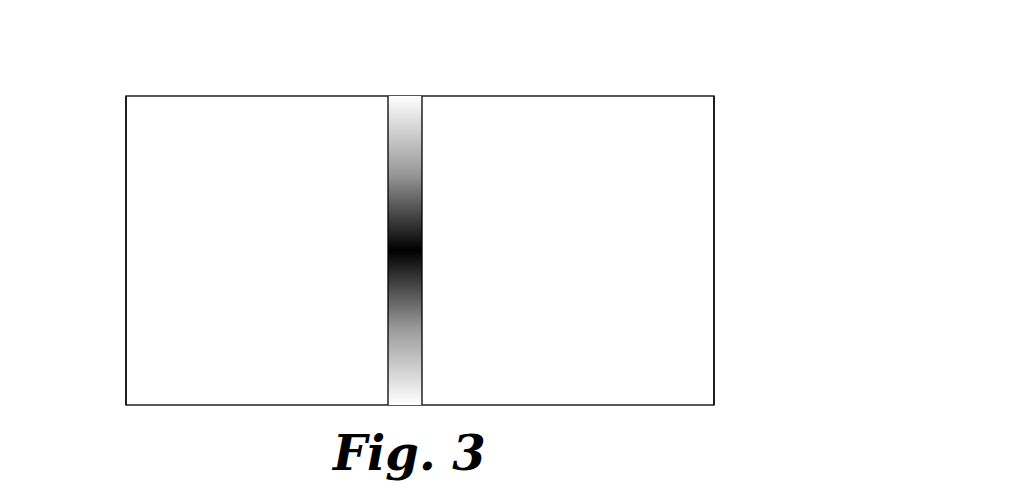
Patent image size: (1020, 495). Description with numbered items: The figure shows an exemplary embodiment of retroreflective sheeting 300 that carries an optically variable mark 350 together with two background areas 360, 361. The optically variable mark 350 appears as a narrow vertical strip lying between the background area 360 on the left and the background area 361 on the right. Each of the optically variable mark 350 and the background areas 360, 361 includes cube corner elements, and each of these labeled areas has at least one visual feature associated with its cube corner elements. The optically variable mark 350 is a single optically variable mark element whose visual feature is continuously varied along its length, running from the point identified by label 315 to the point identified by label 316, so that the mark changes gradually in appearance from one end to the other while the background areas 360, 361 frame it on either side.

The retroreflective sheeting 300 is at (710, 67).
The point 315 is at (395, 231).
The point 316 is at (407, 392).
The optically variable mark 350 is at (373, 99).
The background area 360 is at (143, 129).
The background area 361 is at (688, 255).